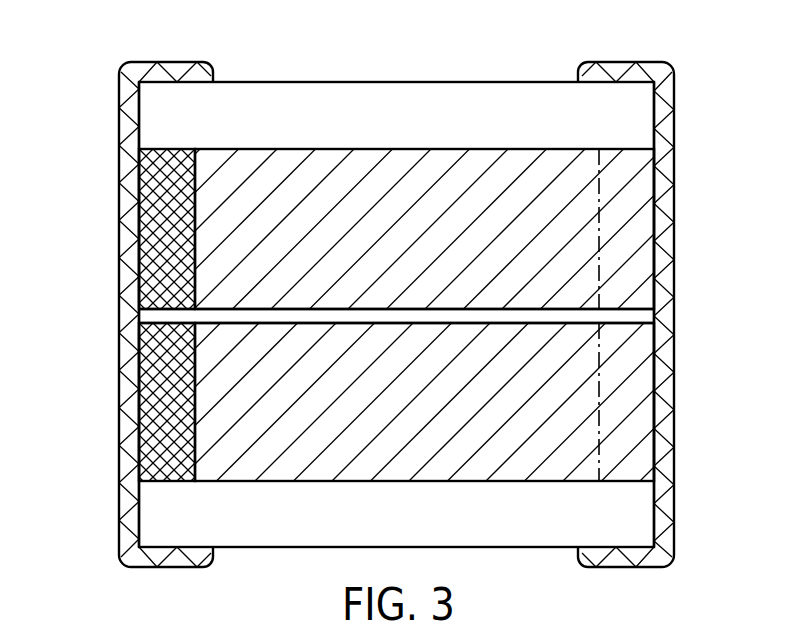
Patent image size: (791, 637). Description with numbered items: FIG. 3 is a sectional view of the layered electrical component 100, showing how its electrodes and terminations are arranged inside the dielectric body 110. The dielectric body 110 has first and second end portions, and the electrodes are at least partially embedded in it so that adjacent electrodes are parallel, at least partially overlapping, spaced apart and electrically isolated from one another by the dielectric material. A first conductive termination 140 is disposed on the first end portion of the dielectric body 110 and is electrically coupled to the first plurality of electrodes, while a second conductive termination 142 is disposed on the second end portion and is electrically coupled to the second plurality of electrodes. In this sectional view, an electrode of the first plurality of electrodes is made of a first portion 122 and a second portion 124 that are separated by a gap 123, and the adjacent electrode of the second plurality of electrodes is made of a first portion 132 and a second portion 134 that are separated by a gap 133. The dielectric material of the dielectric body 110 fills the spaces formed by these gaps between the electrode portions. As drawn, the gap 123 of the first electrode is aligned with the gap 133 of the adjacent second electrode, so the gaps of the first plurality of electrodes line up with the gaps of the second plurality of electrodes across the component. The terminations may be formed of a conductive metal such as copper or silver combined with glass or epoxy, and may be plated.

The electrical component 100 is at (134, 38).
The dielectric body 110 is at (401, 102).
The first portion of first electrode 122 is at (148, 230).
The gap 123 is at (155, 315).
The second portion of first electrode 124 is at (148, 405).
The first portion of second electrode 132 is at (633, 235).
The gap 133 is at (603, 315).
The second portion of second electrode 134 is at (627, 415).
The first conductive termination 140 is at (119, 92).
The second conductive termination 142 is at (675, 90).